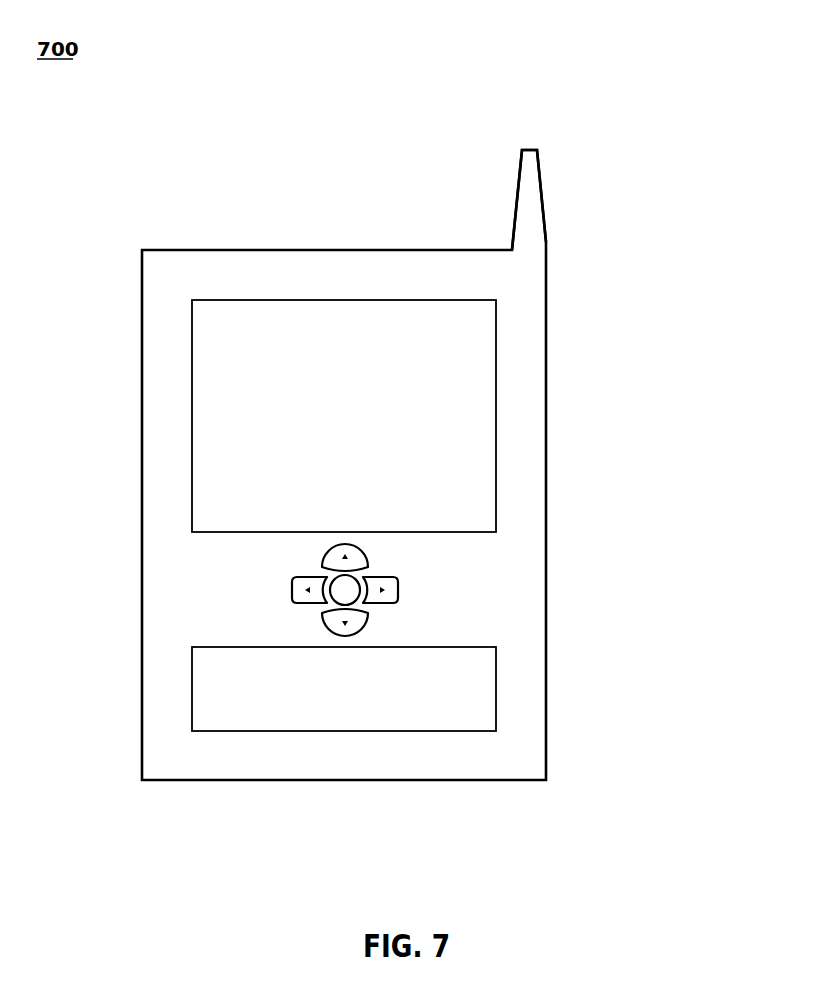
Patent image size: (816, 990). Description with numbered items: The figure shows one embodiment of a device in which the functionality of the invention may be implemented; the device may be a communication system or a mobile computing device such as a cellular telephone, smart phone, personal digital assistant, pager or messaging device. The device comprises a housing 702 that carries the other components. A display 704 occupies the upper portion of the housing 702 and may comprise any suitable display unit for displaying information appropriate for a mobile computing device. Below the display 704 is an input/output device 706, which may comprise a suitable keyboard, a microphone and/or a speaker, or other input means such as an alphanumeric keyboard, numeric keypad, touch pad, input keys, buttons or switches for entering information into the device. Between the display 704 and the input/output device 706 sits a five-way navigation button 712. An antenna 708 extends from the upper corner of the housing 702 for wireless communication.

The housing 702 is at (548, 515).
The display 704 is at (497, 315).
The input/output (I/O) device 706 is at (497, 680).
The antenna 708 is at (517, 193).
The five-way navigation button 712 is at (410, 582).